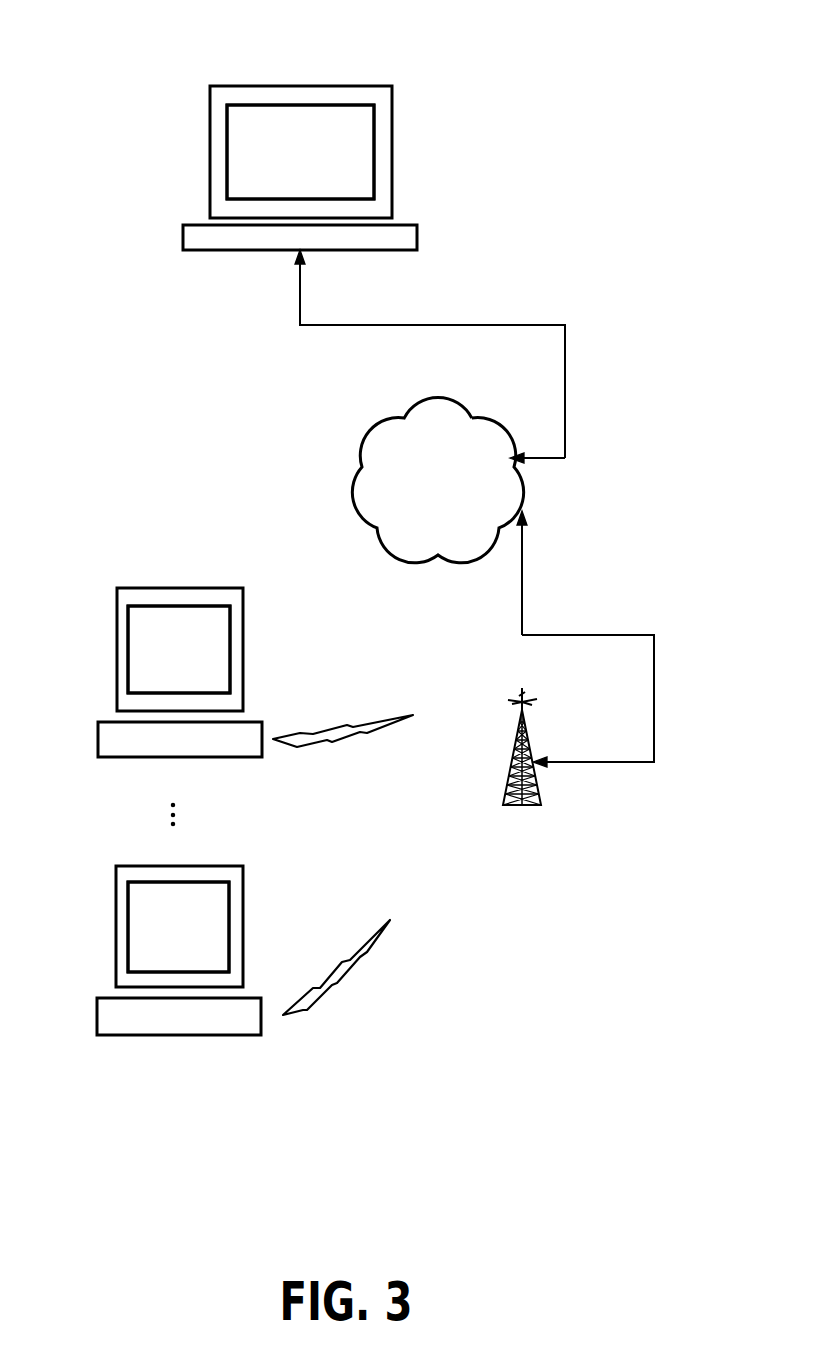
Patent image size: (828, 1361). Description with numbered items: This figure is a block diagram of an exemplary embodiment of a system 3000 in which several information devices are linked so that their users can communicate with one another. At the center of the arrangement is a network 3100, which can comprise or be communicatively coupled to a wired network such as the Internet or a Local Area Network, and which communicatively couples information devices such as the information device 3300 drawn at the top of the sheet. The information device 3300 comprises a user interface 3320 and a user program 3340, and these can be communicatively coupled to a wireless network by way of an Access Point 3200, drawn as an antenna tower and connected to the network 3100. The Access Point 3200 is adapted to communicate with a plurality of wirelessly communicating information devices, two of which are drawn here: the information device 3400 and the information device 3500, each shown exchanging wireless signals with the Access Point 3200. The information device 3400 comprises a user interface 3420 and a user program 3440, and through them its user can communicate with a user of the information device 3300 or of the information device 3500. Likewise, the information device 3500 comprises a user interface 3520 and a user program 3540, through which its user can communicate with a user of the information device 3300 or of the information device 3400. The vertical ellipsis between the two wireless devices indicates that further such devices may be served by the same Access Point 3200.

The system 3000 is at (424, 38).
The network 3100 is at (437, 479).
The access point 3200 is at (521, 767).
The information device 3300 is at (300, 192).
The user interface 3320 is at (300, 152).
The user program 3340 is at (300, 152).
The information device 3400 is at (180, 691).
The user interface 3420 is at (179, 649).
The user program 3440 is at (179, 649).
The information device 3500 is at (179, 969).
The user interface 3520 is at (178, 927).
The user program 3540 is at (178, 927).